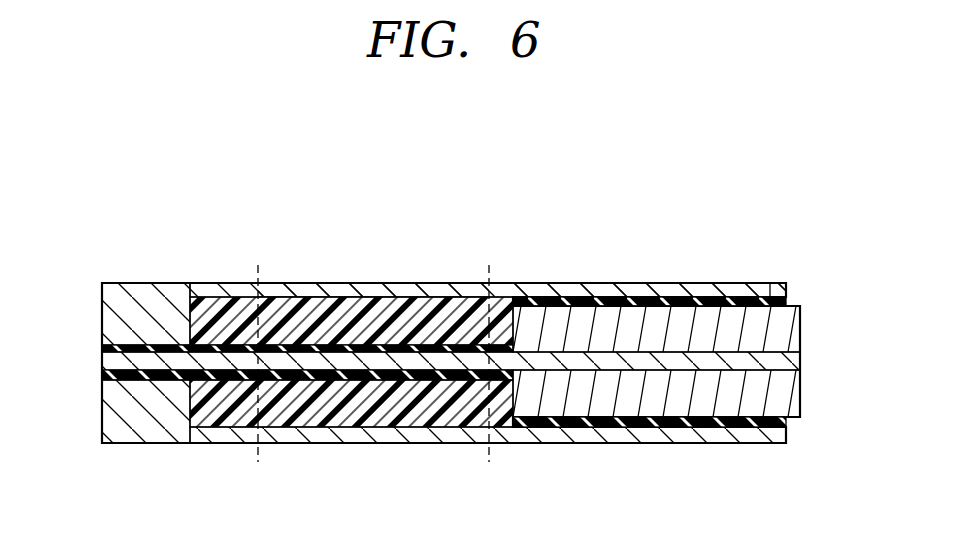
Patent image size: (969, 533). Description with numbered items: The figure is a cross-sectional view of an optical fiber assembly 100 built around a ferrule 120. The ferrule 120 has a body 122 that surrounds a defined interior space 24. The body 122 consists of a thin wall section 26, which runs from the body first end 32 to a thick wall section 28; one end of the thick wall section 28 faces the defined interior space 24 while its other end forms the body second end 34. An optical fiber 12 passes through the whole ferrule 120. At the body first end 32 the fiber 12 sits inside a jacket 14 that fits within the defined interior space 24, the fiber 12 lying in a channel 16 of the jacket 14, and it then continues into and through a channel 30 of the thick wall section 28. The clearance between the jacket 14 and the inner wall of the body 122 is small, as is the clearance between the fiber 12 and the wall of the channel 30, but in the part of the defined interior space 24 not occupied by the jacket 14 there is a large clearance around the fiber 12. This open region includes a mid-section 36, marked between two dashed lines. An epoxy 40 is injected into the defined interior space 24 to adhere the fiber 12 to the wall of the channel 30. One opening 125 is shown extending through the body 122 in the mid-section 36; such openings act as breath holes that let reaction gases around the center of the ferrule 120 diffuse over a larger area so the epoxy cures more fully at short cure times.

The optical fiber assembly 100 is at (530, 197).
The thick wall section 28 is at (163, 283).
The opening 125 is at (360, 283).
The body 122 is at (455, 283).
The thin wall section 26 is at (547, 283).
The ferrule 120 is at (642, 283).
The body first end 32 is at (786, 290).
The body second end 34 is at (102, 301).
The defined interior space 24 is at (290, 283).
The optical fiber 12 is at (102, 362).
The mid-section 36 is at (302, 417).
The channel 30 is at (167, 382).
The epoxy 40 is at (390, 413).
The jacket 14 is at (690, 400).
The channel 16 is at (612, 373).